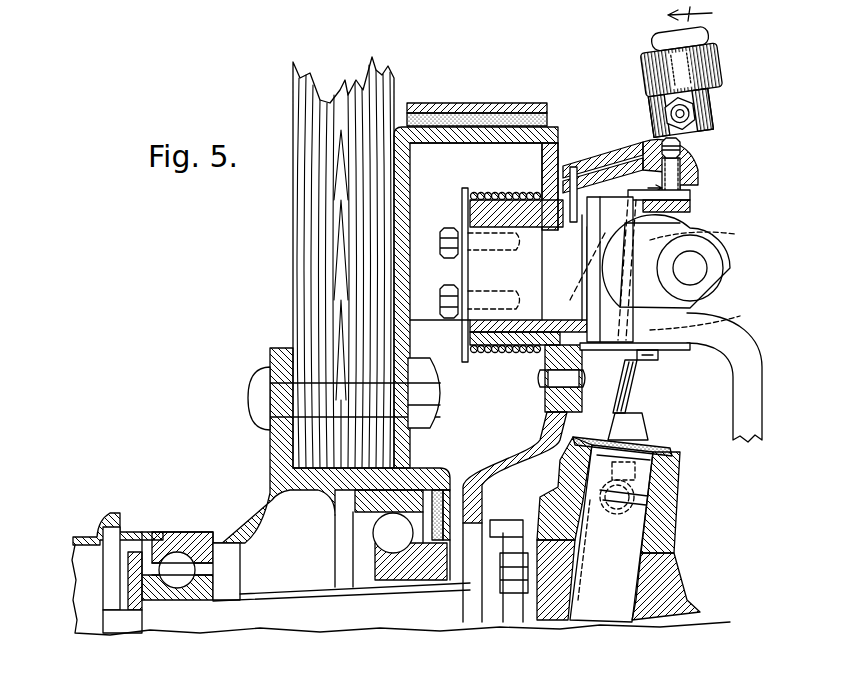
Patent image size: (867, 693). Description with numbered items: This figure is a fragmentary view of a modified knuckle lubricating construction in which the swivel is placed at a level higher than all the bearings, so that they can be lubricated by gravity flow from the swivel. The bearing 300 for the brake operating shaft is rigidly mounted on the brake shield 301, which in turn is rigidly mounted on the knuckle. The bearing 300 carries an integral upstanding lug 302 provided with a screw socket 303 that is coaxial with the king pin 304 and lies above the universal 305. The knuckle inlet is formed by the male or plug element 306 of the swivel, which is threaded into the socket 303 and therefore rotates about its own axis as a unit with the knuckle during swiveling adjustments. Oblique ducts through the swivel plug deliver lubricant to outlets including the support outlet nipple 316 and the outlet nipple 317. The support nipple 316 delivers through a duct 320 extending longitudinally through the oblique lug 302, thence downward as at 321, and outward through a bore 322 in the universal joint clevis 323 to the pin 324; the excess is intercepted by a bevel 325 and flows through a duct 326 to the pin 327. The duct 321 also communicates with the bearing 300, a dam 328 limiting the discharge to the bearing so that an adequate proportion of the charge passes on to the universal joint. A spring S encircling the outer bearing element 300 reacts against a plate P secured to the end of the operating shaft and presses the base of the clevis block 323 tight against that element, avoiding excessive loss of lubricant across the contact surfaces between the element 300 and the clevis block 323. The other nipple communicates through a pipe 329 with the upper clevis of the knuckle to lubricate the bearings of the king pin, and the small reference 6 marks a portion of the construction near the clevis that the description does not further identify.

The bearing 300 is at (505, 352).
The brake shield 301 is at (528, 432).
The upstanding lug 302 is at (577, 165).
The screw socket 303 is at (688, 152).
The king pin 304 is at (618, 529).
The universal 305 is at (690, 224).
The plug element 306 is at (710, 110).
The support outlet nipple 316 is at (652, 130).
The outlet nipple 317 is at (705, 44).
The duct 320 is at (608, 172).
The duct 321 is at (504, 243).
The bore 322 is at (583, 282).
The universal joint clevis 323 is at (690, 197).
The pin 324 is at (690, 320).
The bevel 325 is at (708, 235).
The duct 326 is at (725, 262).
The pin 327 is at (693, 270).
The dam 328 is at (492, 231).
The pipe 329 is at (637, 391).
The block 6 is at (668, 192).
The plate P is at (462, 208).
The spring S is at (521, 193).